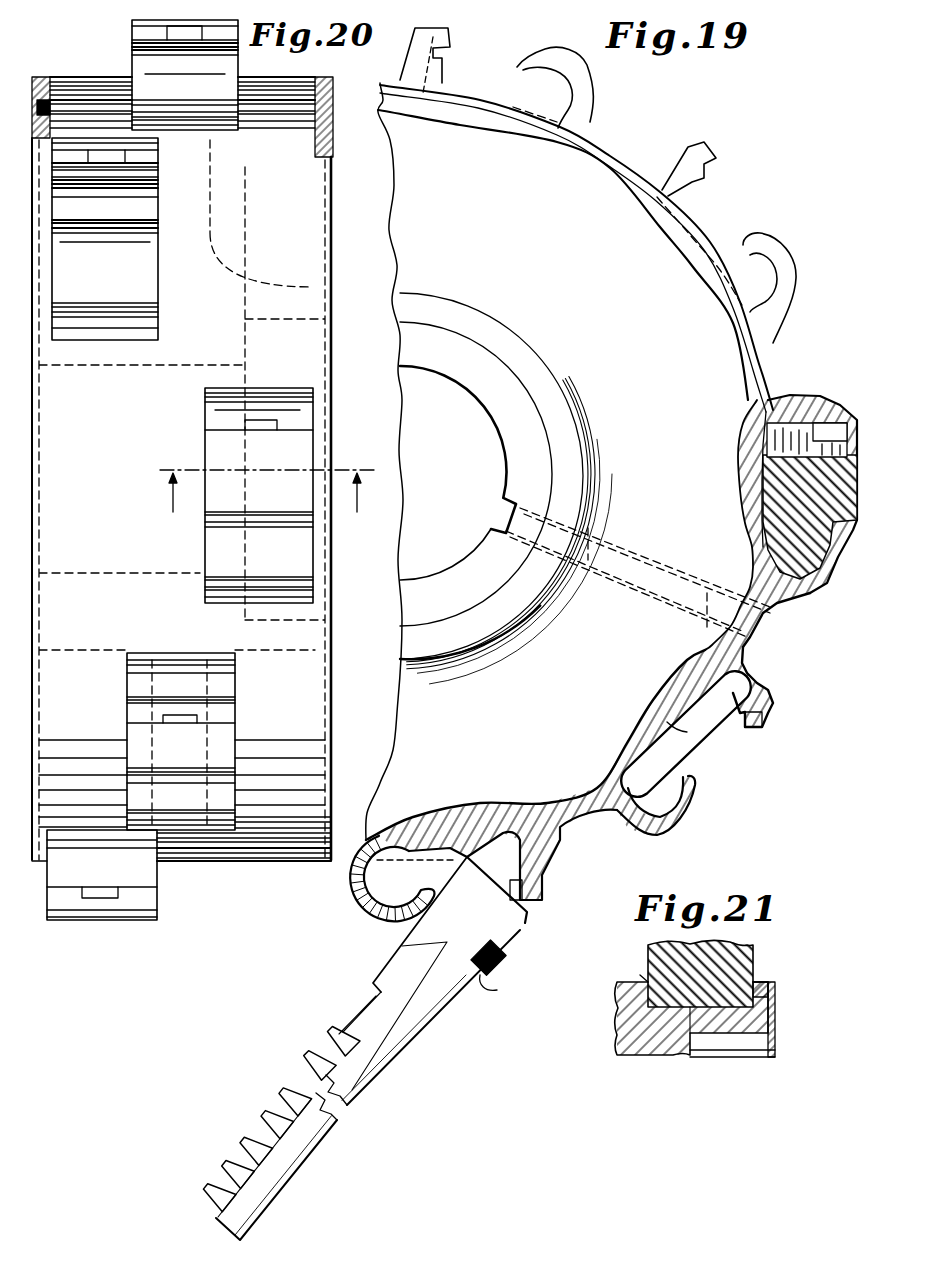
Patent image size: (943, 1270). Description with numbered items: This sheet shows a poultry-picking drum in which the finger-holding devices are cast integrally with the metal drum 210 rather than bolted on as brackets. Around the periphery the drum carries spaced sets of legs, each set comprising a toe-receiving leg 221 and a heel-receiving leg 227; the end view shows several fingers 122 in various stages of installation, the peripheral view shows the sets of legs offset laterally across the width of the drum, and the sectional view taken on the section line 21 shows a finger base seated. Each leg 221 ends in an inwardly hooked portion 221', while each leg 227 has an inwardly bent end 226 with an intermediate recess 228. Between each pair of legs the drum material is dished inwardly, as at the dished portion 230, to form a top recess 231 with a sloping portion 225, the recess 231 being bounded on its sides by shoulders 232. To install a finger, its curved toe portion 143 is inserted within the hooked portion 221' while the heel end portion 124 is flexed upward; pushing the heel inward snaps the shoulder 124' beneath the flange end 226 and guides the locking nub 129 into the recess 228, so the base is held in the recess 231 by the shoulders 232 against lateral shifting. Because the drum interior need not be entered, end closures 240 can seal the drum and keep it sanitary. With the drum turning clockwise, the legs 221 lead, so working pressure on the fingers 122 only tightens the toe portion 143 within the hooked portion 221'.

In FIG. 20, the section line 21— 21 is at (267, 503).
In FIG. 19, the finger 122 is at (388, 1078).
In FIG. 21, the finger 122 is at (753, 943).
In FIG. 19, the heel end portion 124 is at (479, 924).
In FIG. 19, the shoulder 124' is at (659, 670).
In FIG. 19, the locking nub 129 is at (850, 423).
In FIG. 19, the curved toe portion 143 is at (770, 548).
In FIG. 20, the metal drum 210 is at (218, 864).
In FIG. 19, the metal drum 210 is at (756, 652).
In FIG. 21, the metal drum 210 is at (612, 1024).
In FIG. 20, the toe-receiving leg 221 is at (182, 483).
In FIG. 19, the toe-receiving leg 221 is at (577, 488).
In FIG. 19, the inwardly hooked portion 221' is at (548, 489).
In FIG. 19, the sloping portion 225 is at (640, 753).
In FIG. 19, the inwardly bent end 226 is at (450, 34).
In FIG. 20, the heel-receiving leg 227 is at (207, 120).
In FIG. 19, the heel-receiving leg 227 is at (410, 62).
In FIG. 20, the recess 228 is at (200, 33).
In FIG. 19, the recess 228 is at (717, 170).
In FIG. 19, the dished portion 230 is at (468, 136).
In FIG. 21, the dished portion 230 is at (777, 1042).
In FIG. 19, the top recess 231 is at (762, 493).
In FIG. 21, the top recess 231 is at (687, 1008).
In FIG. 21, the shoulders 232 is at (648, 974).
In FIG. 20, the end closures 240 is at (40, 77).
In FIG. 21, the end closures 240 is at (776, 1012).